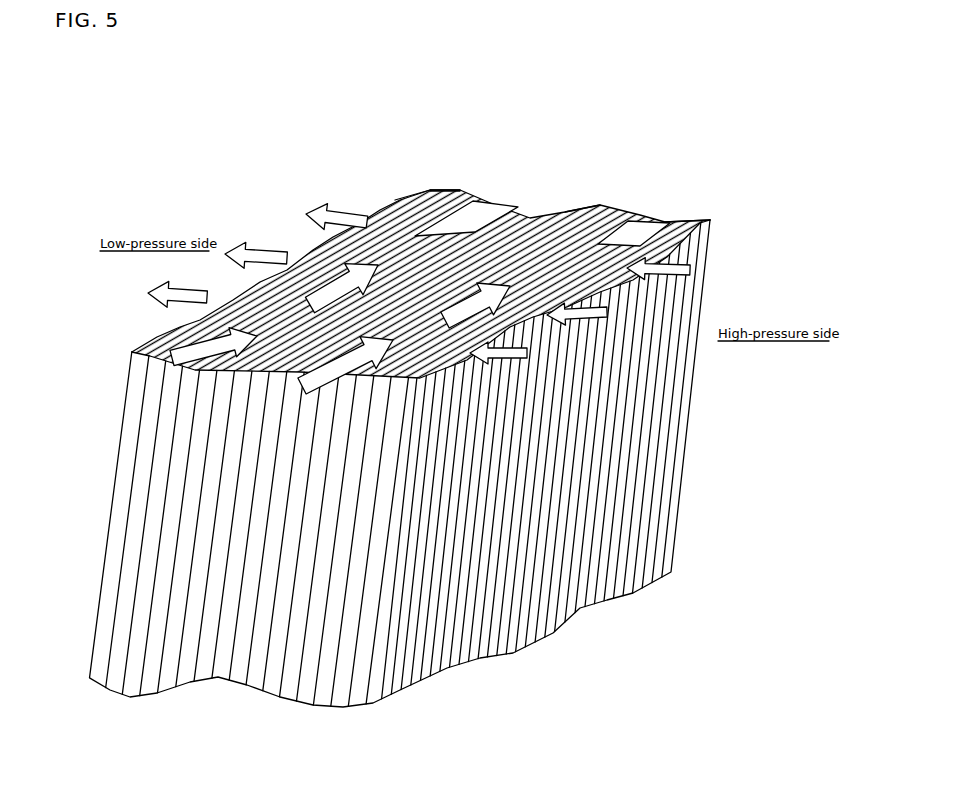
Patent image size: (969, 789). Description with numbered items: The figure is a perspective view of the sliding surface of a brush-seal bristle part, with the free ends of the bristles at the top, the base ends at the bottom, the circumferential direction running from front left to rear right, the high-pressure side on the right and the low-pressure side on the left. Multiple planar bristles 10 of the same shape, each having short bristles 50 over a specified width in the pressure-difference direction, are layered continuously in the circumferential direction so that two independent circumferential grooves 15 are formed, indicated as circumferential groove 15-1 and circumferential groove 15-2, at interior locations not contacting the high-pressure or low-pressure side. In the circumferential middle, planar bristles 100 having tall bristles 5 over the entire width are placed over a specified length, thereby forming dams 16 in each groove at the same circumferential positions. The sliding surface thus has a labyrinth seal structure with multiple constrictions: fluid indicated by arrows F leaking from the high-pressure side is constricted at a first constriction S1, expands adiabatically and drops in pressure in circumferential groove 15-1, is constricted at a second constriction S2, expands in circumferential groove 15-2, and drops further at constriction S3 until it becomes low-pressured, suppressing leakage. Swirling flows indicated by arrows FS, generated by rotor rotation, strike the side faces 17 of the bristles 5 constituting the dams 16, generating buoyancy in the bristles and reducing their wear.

The bristle 5 is at (133, 387).
The planar bristle 10 is at (418, 205).
The circumferential groove 15 is at (660, 108).
The circumferential groove 15-1 is at (615, 248).
The circumferential groove 15-2 is at (490, 245).
The dam 16 is at (465, 215).
The side face 17 is at (173, 378).
The short bristle 50 is at (165, 575).
The planar bristle 100 is at (338, 246).
The fluid flow F is at (322, 207).
The swirling flow FS is at (340, 388).
The first constriction S1 is at (683, 207).
The second constriction S2 is at (560, 200).
The constriction S3 is at (425, 199).